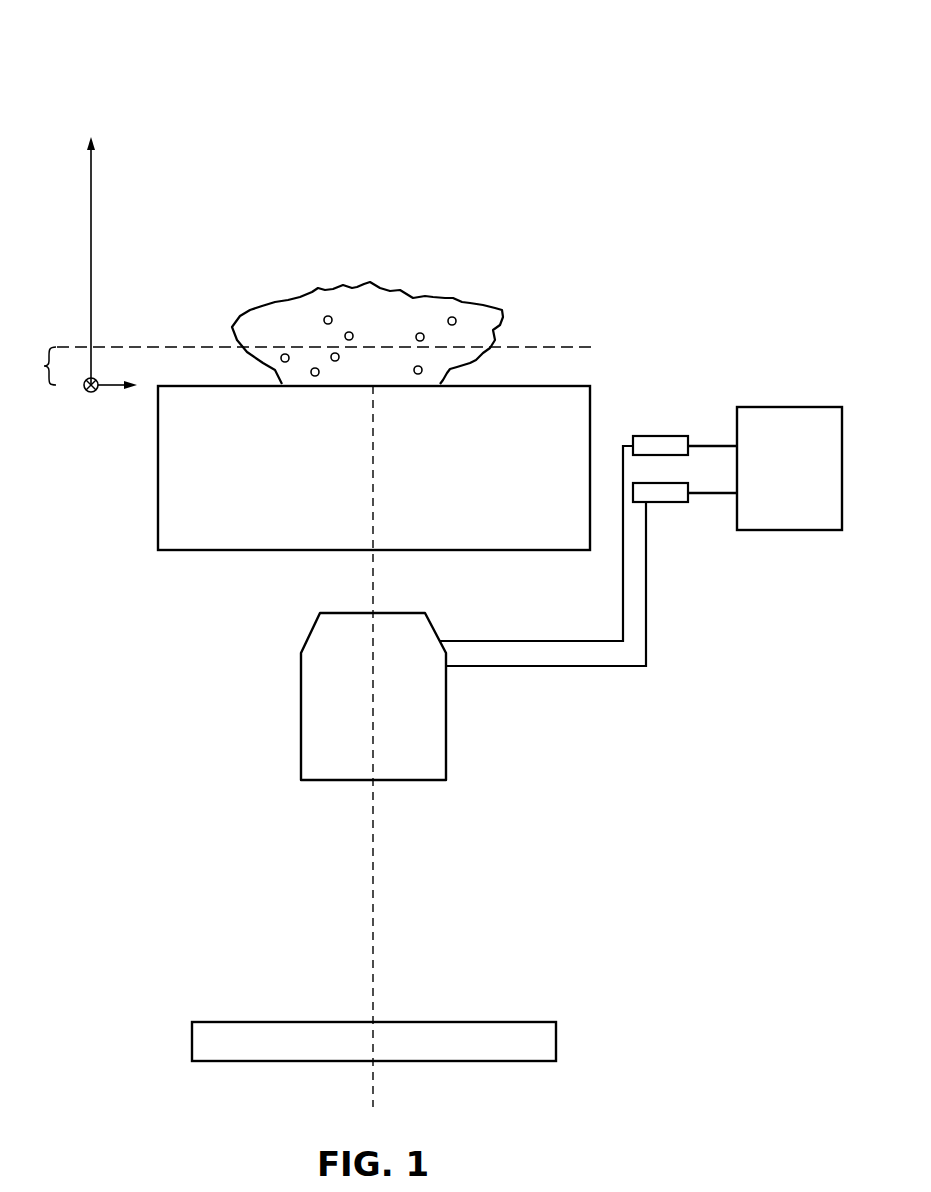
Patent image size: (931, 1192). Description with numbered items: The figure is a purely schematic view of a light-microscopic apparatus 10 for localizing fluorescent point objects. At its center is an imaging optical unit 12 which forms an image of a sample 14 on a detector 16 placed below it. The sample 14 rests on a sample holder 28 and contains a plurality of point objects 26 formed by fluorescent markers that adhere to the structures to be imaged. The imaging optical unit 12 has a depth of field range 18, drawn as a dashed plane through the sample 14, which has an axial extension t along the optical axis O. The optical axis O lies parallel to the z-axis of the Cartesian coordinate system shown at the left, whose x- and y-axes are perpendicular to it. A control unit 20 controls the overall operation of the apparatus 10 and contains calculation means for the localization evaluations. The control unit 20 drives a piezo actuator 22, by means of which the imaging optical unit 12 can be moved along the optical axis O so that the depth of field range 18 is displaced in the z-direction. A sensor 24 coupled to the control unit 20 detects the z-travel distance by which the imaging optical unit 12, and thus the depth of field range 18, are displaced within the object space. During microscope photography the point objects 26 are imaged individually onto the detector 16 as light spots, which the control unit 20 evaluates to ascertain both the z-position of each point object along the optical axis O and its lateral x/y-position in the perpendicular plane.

The light-microscopic apparatus 10 is at (642, 115).
The imaging optical unit 12 is at (446, 755).
The sample 14 is at (403, 288).
The detector 16 is at (556, 1040).
The depth of field range 18 is at (595, 360).
The control unit 20 is at (787, 407).
The piezo actuator 22 is at (665, 503).
The sensor 24 is at (660, 436).
The point objects 26 is at (329, 315).
The sample holder 28 is at (590, 410).
The optical axis O is at (375, 766).
The axial extension t is at (46, 366).